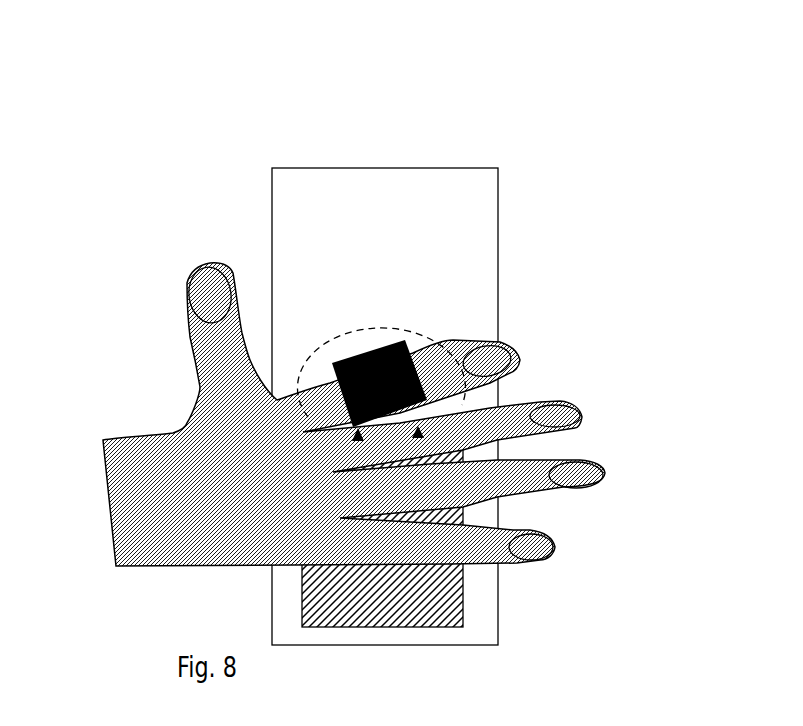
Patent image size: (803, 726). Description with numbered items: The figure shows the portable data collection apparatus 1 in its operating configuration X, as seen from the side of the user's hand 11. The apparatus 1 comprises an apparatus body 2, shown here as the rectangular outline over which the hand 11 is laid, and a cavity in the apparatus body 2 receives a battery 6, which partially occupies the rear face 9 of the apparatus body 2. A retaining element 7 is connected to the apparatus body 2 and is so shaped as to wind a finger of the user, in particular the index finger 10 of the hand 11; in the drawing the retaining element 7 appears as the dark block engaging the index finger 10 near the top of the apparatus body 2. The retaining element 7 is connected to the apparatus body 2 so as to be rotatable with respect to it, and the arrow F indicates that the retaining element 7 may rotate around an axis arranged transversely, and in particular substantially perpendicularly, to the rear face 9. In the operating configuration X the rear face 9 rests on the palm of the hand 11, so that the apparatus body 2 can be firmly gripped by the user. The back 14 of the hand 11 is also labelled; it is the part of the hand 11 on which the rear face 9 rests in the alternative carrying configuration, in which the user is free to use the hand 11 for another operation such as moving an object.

The portable data collection apparatus 1 is at (254, 134).
The apparatus body 2 is at (498, 218).
The battery 6 is at (463, 597).
The retaining element 7 is at (378, 340).
The rear face 9 is at (488, 515).
The index finger 10 is at (451, 342).
The hand 11 is at (187, 463).
The back of the hand 14 is at (320, 437).
The operating configuration X is at (183, 243).
The arrow F is at (340, 333).